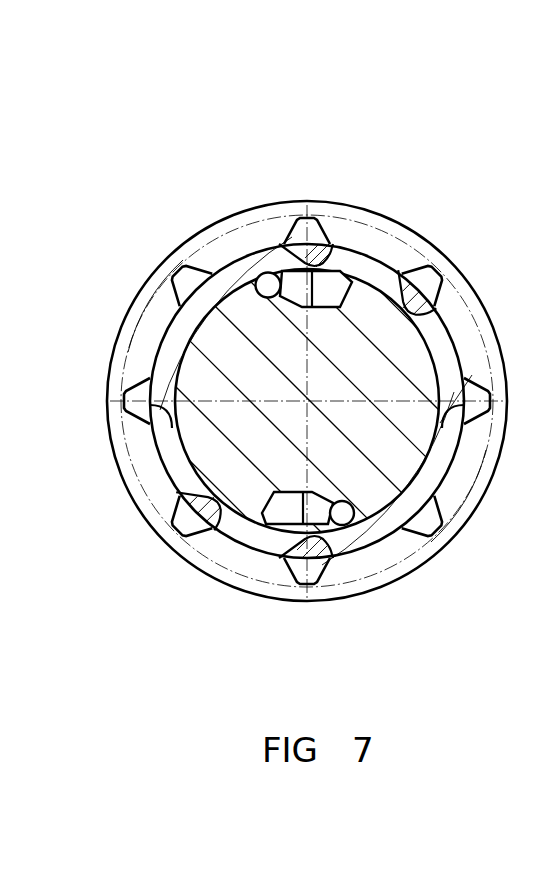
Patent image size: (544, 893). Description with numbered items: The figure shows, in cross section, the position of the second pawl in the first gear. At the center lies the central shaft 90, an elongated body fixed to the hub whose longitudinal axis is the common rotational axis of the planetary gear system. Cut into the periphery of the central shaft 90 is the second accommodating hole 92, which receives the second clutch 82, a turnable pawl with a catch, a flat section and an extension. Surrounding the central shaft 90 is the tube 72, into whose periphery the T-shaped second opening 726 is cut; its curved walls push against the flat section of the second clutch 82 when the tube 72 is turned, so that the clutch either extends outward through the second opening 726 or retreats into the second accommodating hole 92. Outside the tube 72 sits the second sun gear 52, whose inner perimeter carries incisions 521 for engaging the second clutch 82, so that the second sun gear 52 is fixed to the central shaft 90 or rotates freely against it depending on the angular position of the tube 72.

The second sun gear 52 is at (238, 233).
The incisions 521 is at (427, 283).
The tube 72 is at (182, 318).
The second opening 726 is at (338, 248).
The second clutch 82 is at (327, 288).
The central shaft 90 is at (237, 423).
The second accommodating hole 92 is at (303, 268).